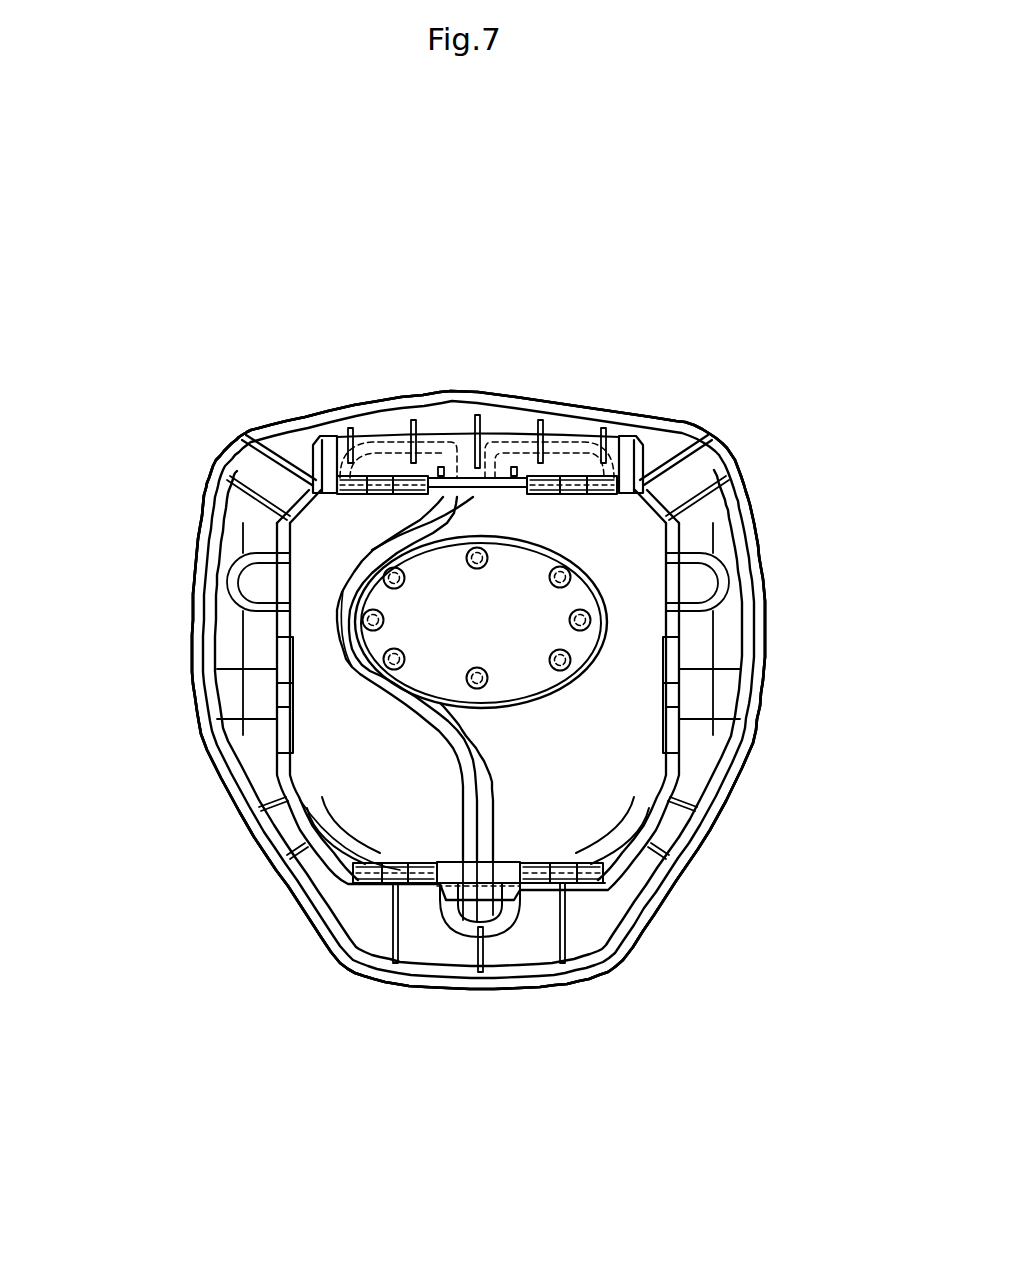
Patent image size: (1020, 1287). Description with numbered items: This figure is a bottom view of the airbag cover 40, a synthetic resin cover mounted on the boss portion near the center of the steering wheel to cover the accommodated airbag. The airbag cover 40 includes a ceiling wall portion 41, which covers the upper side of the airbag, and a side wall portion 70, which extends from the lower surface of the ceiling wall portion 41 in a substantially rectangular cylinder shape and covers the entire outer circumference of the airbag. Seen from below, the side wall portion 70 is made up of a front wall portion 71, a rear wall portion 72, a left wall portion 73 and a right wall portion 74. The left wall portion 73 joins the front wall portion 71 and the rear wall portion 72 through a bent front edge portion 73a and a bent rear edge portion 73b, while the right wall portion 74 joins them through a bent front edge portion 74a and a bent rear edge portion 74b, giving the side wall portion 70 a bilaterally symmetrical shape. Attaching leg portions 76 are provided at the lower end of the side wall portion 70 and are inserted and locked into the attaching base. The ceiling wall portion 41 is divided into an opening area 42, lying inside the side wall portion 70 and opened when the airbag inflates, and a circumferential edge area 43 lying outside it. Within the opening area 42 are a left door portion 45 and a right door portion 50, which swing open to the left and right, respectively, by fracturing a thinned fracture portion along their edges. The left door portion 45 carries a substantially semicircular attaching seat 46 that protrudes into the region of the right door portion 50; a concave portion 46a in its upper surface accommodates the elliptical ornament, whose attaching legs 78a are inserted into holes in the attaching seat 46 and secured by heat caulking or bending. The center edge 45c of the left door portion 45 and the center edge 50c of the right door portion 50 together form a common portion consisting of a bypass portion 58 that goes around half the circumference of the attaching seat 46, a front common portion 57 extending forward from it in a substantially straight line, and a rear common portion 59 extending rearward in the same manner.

The airbag cover 40 is at (275, 343).
The ceiling wall portion 41 is at (705, 1062).
The opening area 42 is at (647, 887).
The circumferential edge area 43 is at (587, 920).
The left door portion 45 is at (598, 834).
The center edge 45c is at (487, 760).
The attaching seat 46 is at (527, 683).
The concave portion 46a is at (400, 656).
The right door portion 50 is at (390, 797).
The center edge 50c is at (332, 603).
The front common portion 57 is at (460, 470).
The bypass portion 58 is at (338, 651).
The rear common portion 59 is at (492, 880).
The side wall portion 70 is at (478, 399).
The front wall portion 71 is at (500, 467).
The rear wall portion 72 is at (367, 897).
The left wall portion 73 is at (702, 692).
The bent front edge portion 73a is at (637, 510).
The bent rear edge portion 73b is at (600, 795).
The right wall portion 74 is at (262, 695).
The bent front edge portion 74a is at (297, 493).
The bent rear edge portion 74b is at (300, 810).
The attaching leg portion 76 is at (383, 478).
The attaching leg 78a is at (484, 565).